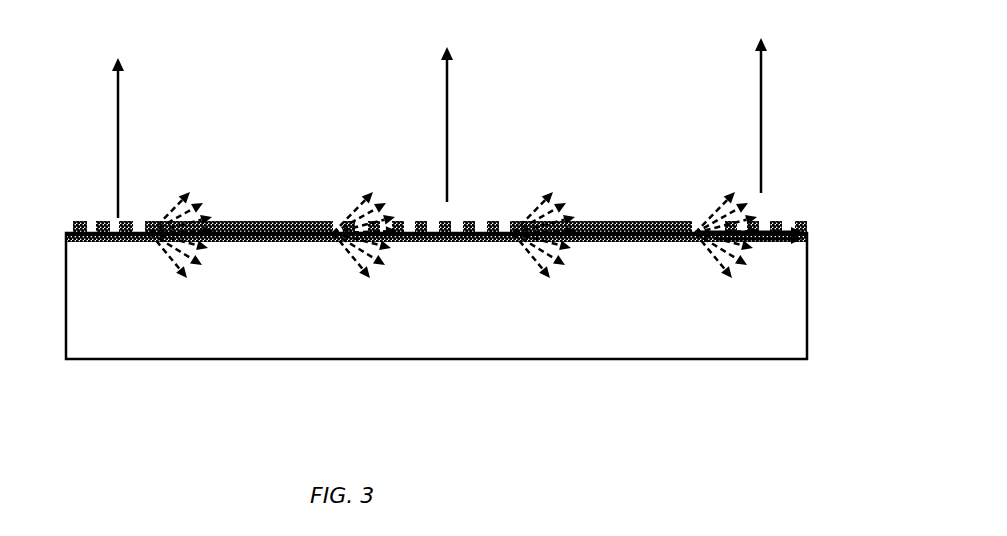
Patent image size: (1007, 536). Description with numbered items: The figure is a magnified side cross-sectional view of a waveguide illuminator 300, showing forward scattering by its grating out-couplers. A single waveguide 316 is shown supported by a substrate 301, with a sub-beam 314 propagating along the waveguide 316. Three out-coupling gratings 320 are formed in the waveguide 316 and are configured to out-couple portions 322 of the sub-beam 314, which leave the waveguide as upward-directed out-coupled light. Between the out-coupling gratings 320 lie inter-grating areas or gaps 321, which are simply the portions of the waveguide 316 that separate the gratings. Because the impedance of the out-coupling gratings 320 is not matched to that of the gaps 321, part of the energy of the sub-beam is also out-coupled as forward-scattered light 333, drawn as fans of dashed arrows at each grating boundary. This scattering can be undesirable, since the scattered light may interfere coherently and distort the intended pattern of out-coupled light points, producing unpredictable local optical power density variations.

The waveguide illuminator 300 is at (368, 85).
The substrate 301 is at (467, 337).
The sub-beam 314 is at (295, 240).
The waveguide 316 is at (230, 240).
The out-coupling gratings 320 is at (95, 200).
The inter-grating areas or gaps 321 is at (268, 210).
The out-coupled portions of the sub-beam 322 is at (120, 85).
The forward-scattered light 333 is at (168, 243).